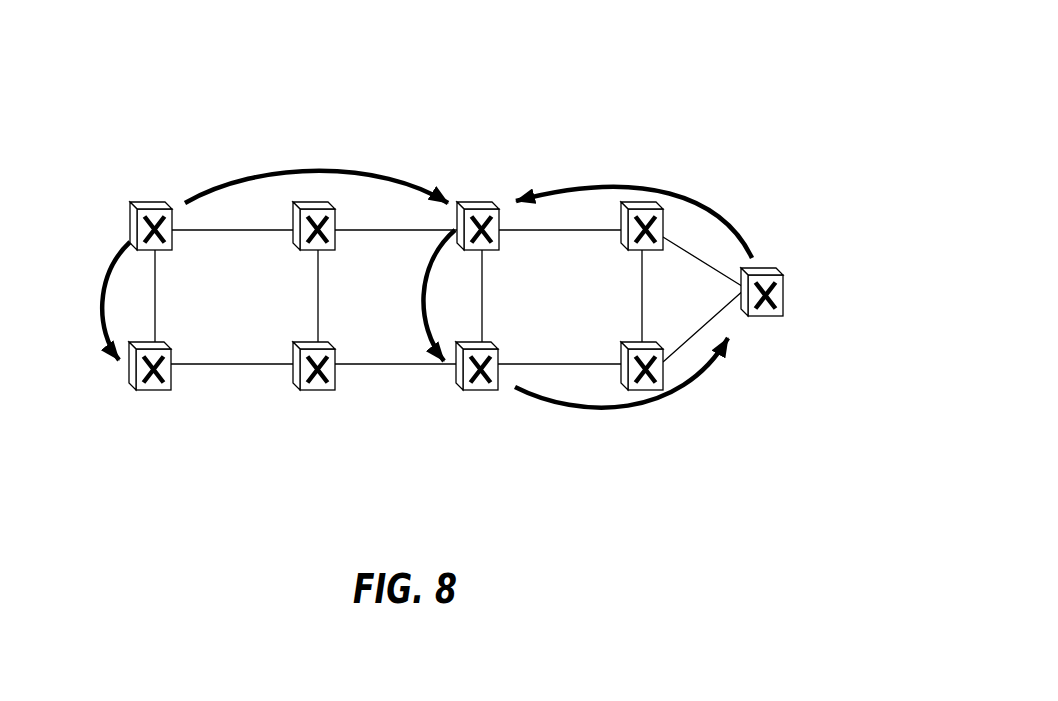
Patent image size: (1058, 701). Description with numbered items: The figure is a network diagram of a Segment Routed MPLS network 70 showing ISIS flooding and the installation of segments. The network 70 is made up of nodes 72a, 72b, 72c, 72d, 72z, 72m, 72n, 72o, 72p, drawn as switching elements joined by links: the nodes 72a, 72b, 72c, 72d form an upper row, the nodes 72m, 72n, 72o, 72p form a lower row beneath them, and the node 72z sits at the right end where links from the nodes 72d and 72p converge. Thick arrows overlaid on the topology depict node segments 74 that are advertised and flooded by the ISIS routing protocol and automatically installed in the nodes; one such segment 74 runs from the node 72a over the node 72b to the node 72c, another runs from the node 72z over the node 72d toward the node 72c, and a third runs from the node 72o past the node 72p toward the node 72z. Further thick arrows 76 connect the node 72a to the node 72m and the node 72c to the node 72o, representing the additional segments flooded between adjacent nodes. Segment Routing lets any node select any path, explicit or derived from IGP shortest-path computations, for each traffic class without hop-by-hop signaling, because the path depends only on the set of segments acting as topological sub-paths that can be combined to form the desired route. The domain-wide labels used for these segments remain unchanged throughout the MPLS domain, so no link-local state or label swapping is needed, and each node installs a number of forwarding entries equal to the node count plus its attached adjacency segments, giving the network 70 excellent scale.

The network 70 is at (767, 83).
The node 72a is at (150, 202).
The node 72b is at (313, 202).
The node 72c is at (478, 202).
The node 72d is at (640, 202).
The node 72z is at (768, 268).
The node 72m is at (150, 390).
The node 72n is at (315, 390).
The node 72o is at (480, 390).
The node 72p is at (645, 390).
The node segments 74 is at (264, 181).
The secondary path 76 is at (100, 300).